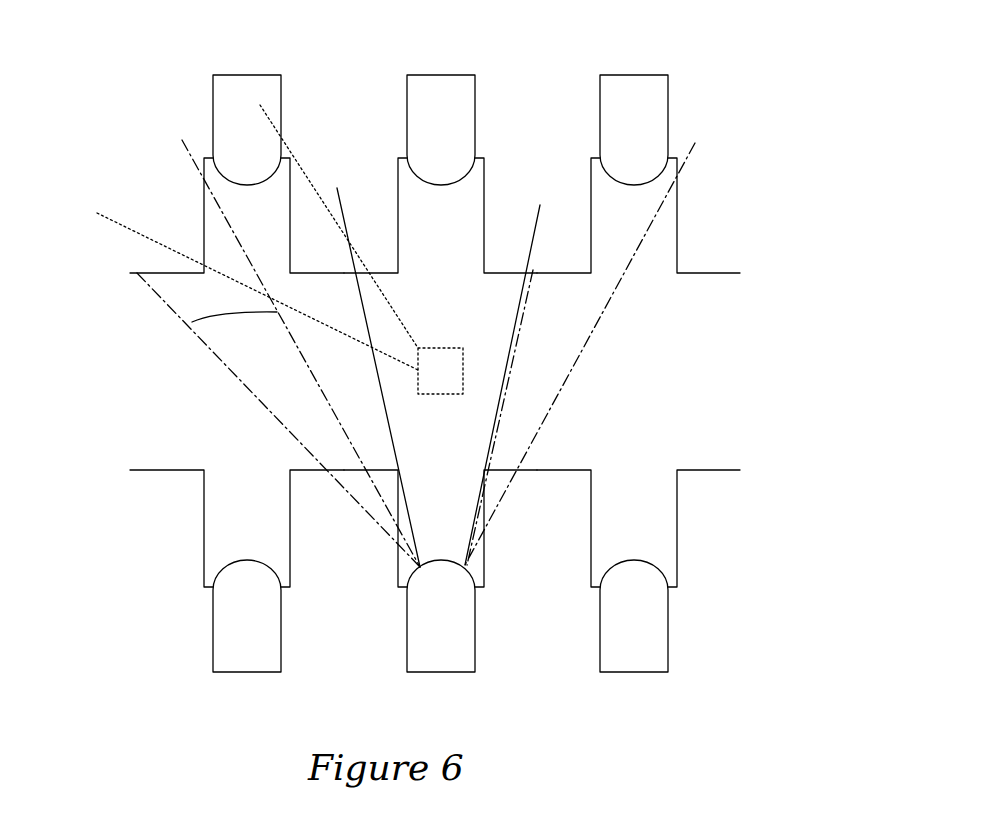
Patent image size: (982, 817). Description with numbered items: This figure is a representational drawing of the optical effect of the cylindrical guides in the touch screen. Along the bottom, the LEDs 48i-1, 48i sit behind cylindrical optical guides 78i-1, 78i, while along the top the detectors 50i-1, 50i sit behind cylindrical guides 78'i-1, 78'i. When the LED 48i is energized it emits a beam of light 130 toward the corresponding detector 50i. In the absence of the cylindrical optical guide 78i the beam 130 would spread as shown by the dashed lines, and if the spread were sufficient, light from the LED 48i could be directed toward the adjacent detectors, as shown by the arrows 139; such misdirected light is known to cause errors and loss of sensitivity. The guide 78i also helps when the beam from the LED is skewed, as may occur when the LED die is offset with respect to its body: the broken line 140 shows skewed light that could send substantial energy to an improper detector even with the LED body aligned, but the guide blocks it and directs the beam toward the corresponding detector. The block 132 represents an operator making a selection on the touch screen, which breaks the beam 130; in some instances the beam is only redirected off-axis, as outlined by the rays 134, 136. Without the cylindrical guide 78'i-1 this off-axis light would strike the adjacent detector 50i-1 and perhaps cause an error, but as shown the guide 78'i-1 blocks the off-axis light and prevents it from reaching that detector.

The adjacent detector 50i-1 is at (213, 100).
The corresponding detector 50i is at (473, 120).
The cylindrical guide 78'i-1 is at (196, 193).
The cylindrical guide 78'i is at (460, 199).
The cylindrical optical guide 78i-1 is at (206, 508).
The cylindrical optical guide 78i is at (398, 578).
The LED 48i-1 is at (213, 633).
The LED 48i is at (407, 650).
The beam of light 130 is at (412, 522).
The block 132 is at (445, 394).
The ray 134 is at (335, 325).
The ray 136 is at (403, 322).
The arrows 139 is at (190, 333).
The broken line 140 is at (518, 350).